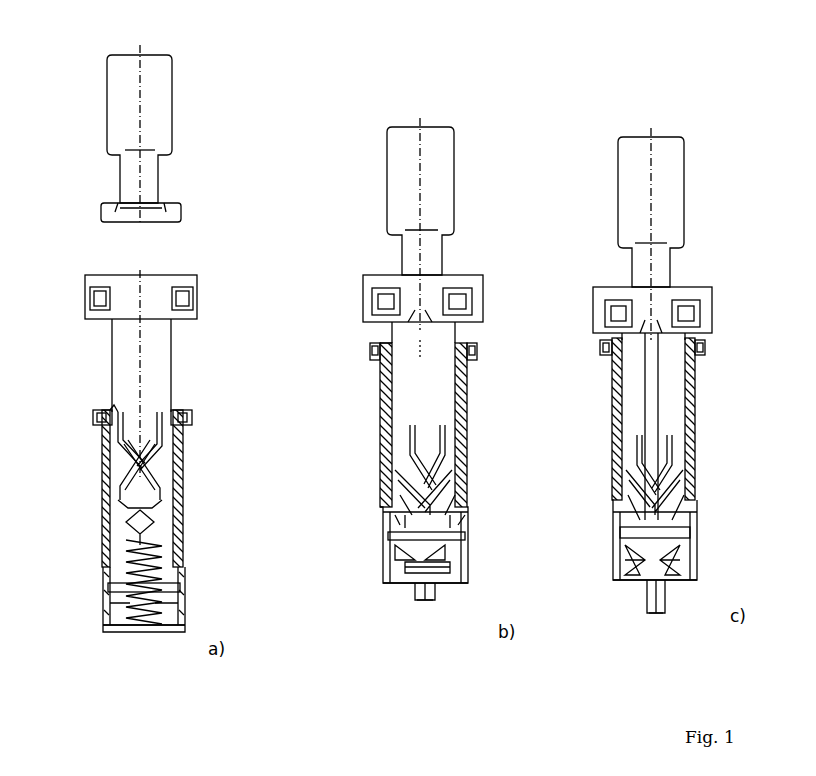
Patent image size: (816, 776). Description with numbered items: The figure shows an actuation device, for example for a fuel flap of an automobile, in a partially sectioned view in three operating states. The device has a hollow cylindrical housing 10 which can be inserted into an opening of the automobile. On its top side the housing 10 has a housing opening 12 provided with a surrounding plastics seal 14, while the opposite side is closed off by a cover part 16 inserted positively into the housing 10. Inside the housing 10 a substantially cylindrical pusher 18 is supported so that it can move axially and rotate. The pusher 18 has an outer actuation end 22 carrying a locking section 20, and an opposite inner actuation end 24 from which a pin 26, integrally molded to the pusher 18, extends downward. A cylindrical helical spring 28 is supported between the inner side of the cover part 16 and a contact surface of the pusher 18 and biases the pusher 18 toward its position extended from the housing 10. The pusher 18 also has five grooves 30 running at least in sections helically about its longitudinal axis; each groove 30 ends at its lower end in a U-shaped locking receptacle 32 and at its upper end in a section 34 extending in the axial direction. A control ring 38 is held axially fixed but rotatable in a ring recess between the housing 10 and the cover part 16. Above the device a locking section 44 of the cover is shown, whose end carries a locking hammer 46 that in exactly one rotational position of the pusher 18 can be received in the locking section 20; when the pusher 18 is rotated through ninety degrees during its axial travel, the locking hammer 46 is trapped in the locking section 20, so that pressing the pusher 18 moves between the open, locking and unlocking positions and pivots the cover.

The housing 10 is at (103, 500).
The housing opening 12 is at (110, 412).
The plastics seal 14 is at (193, 418).
The cover part 16 is at (125, 633).
The pusher 18 is at (163, 350).
The locking section 20 is at (162, 278).
The outer actuation end 22 is at (114, 277).
The inner actuation end 24 is at (165, 545).
The pin 26 is at (150, 560).
The helical spring 28 is at (128, 605).
The grooves 30 is at (150, 470).
The locking receptacle 32 is at (395, 518).
The axially extending section 34 is at (160, 420).
The control ring 38 is at (174, 588).
The locking section of the cover 44 is at (160, 175).
The locking hammer 46 is at (145, 226).